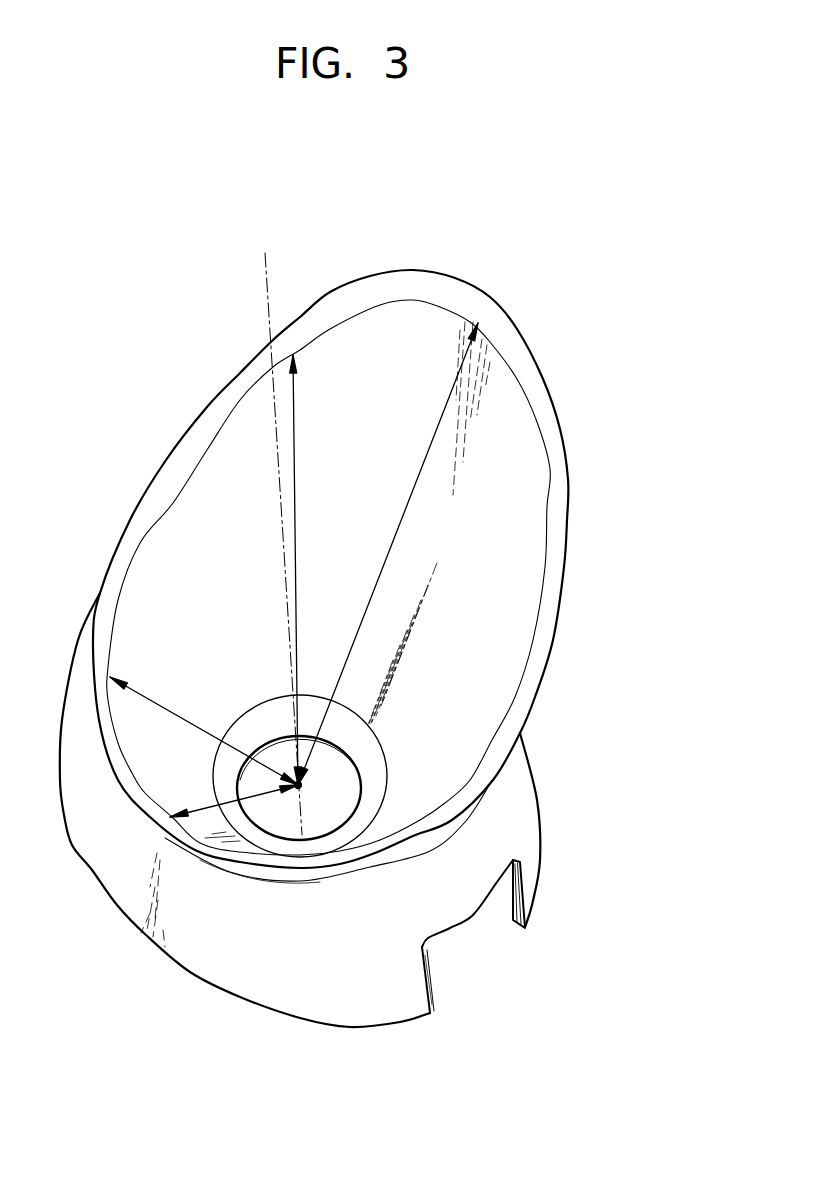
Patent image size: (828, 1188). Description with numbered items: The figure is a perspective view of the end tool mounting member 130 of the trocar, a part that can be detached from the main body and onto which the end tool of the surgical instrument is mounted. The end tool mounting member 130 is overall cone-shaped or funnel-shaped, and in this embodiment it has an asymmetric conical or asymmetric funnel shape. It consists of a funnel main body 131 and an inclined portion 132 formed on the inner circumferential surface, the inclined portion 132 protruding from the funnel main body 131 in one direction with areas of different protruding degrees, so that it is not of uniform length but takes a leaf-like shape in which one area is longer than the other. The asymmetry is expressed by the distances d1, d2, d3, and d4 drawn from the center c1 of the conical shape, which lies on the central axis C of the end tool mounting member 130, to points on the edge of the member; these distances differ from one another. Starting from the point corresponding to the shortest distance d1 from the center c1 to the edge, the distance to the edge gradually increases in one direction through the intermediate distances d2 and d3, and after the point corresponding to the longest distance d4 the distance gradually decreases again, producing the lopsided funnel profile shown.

The end tool mounting member 130 is at (576, 377).
The funnel main body 131 is at (503, 823).
The inclined portion 132 is at (532, 517).
The central axis C is at (280, 531).
The center of the conical shape c1 is at (315, 787).
The shortest distance d1 is at (234, 798).
The distance d2 is at (204, 731).
The distance d3 is at (307, 570).
The longest distance d4 is at (388, 554).